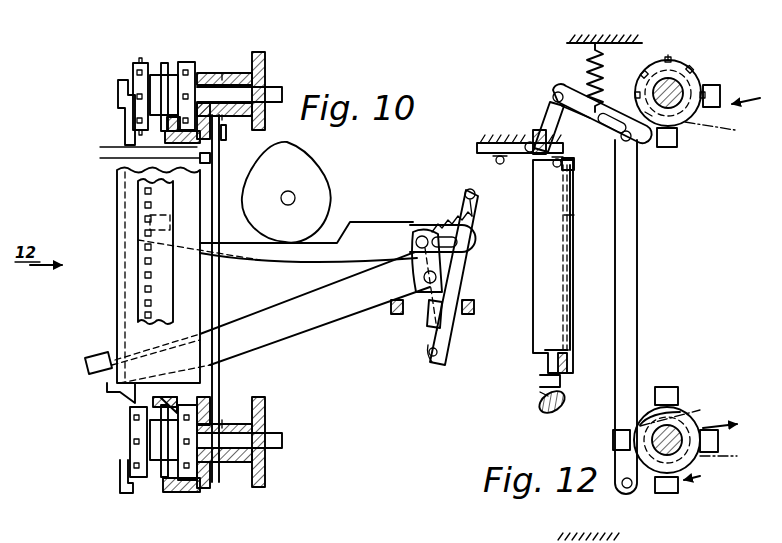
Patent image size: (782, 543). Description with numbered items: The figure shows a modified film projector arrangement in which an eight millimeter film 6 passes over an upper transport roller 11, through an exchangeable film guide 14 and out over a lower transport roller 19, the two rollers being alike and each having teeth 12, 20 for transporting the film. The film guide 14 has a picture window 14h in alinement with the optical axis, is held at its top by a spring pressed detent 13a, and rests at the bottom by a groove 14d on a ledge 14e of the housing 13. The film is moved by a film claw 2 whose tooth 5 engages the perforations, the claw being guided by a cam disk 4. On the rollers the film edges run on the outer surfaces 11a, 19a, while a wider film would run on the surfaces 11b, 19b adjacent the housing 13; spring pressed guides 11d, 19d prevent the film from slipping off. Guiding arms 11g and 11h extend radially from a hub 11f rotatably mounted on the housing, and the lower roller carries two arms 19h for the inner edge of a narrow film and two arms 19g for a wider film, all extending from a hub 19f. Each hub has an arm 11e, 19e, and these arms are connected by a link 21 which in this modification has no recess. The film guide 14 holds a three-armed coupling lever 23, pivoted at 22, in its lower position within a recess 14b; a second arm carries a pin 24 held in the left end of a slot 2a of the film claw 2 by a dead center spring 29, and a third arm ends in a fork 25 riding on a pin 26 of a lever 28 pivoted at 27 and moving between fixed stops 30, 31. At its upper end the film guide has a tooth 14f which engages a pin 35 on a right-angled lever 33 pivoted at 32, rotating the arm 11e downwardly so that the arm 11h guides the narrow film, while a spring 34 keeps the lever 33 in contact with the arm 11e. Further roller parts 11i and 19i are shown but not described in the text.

In FIG. 10, the film claw 2 is at (292, 250).
In FIG. 10, the slot 2a is at (468, 236).
In FIG. 10, the cam disk 4 is at (312, 185).
In FIG. 10, the tooth 5 is at (138, 242).
In FIG. 10, the film 6 is at (150, 276).
In FIG. 12, the film 6 is at (573, 290).
In FIG. 10, the upper transport roller 11 is at (152, 74).
In FIG. 12, the upper transport roller 11 is at (689, 72).
In FIG. 10, the outer roller surface 11a is at (133, 70).
In FIG. 12, the outer roller surface 11a is at (663, 58).
In FIG. 10, the roller surface 11b is at (190, 62).
In FIG. 10, the spring pressed guide 11d is at (120, 95).
In FIG. 10, the arm 11e is at (224, 140).
In FIG. 12, the arm 11e is at (648, 118).
In FIG. 10, the hub 11f is at (222, 78).
In FIG. 12, the hub 11f is at (712, 127).
In FIG. 12, the guiding arm 11g is at (720, 90).
In FIG. 10, the guiding arm 11h is at (132, 135).
In FIG. 12, the guiding arm 11h is at (677, 137).
In FIG. 10, the thin plate 11i is at (172, 70).
In FIG. 12, the teeth 12 is at (670, 58).
In FIG. 10, the housing 13 is at (262, 88).
In FIG. 12, the housing 13 is at (482, 143).
In FIG. 12, the spring pressed detent 13a is at (574, 172).
In FIG. 10, the film guide 14 is at (125, 321).
In FIG. 12, the film guide 14 is at (553, 278).
In FIG. 10, the recess 14b is at (118, 358).
In FIG. 12, the recess 14b is at (570, 345).
In FIG. 12, the groove 14d is at (546, 381).
In FIG. 10, the ledge 14e is at (200, 385).
In FIG. 12, the ledge 14e is at (540, 405).
In FIG. 10, the tooth 14f is at (197, 160).
In FIG. 12, the tooth 14f is at (538, 130).
In FIG. 10, the picture window 14h is at (150, 222).
In FIG. 12, the picture window 14h is at (570, 224).
In FIG. 10, the lower transport roller 19 is at (152, 472).
In FIG. 12, the lower transport roller 19 is at (690, 447).
In FIG. 10, the outer roller surface 19a is at (136, 455).
In FIG. 12, the outer roller surface 19a is at (683, 415).
In FIG. 10, the roller surface 19b is at (192, 482).
In FIG. 10, the spring pressed guide 19d is at (120, 392).
In FIG. 12, the arm 19e is at (631, 490).
In FIG. 10, the hub 19f is at (222, 424).
In FIG. 12, the hub 19f is at (724, 413).
In FIG. 12, the guiding arm 19g is at (615, 432).
In FIG. 10, the guiding arm 19h is at (152, 405).
In FIG. 12, the guiding arm 19h is at (667, 387).
In FIG. 10, the thin plate 19i is at (162, 430).
In FIG. 12, the teeth 20 is at (699, 486).
In FIG. 10, the link 21 is at (221, 287).
In FIG. 12, the link 21 is at (640, 286).
In FIG. 10, the pivot 22 is at (437, 276).
In FIG. 10, the coupling lever 23 is at (300, 325).
In FIG. 12, the coupling lever 23 is at (552, 357).
In FIG. 10, the pin 24 is at (418, 238).
In FIG. 10, the fork 25 is at (430, 318).
In FIG. 10, the pin 26 is at (447, 340).
In FIG. 10, the pivot 27 is at (433, 358).
In FIG. 10, the lever 28 is at (428, 346).
In FIG. 10, the dead center spring 29 is at (445, 215).
In FIG. 10, the fixed stop 30 is at (470, 314).
In FIG. 10, the fixed stop 31 is at (396, 314).
In FIG. 12, the pivot 32 is at (560, 88).
In FIG. 10, the right-angled lever 33 is at (212, 162).
In FIG. 12, the right-angled lever 33 is at (554, 110).
In FIG. 12, the spring 34 is at (603, 76).
In FIG. 10, the pin 35 is at (195, 150).
In FIG. 12, the pin 35 is at (527, 143).